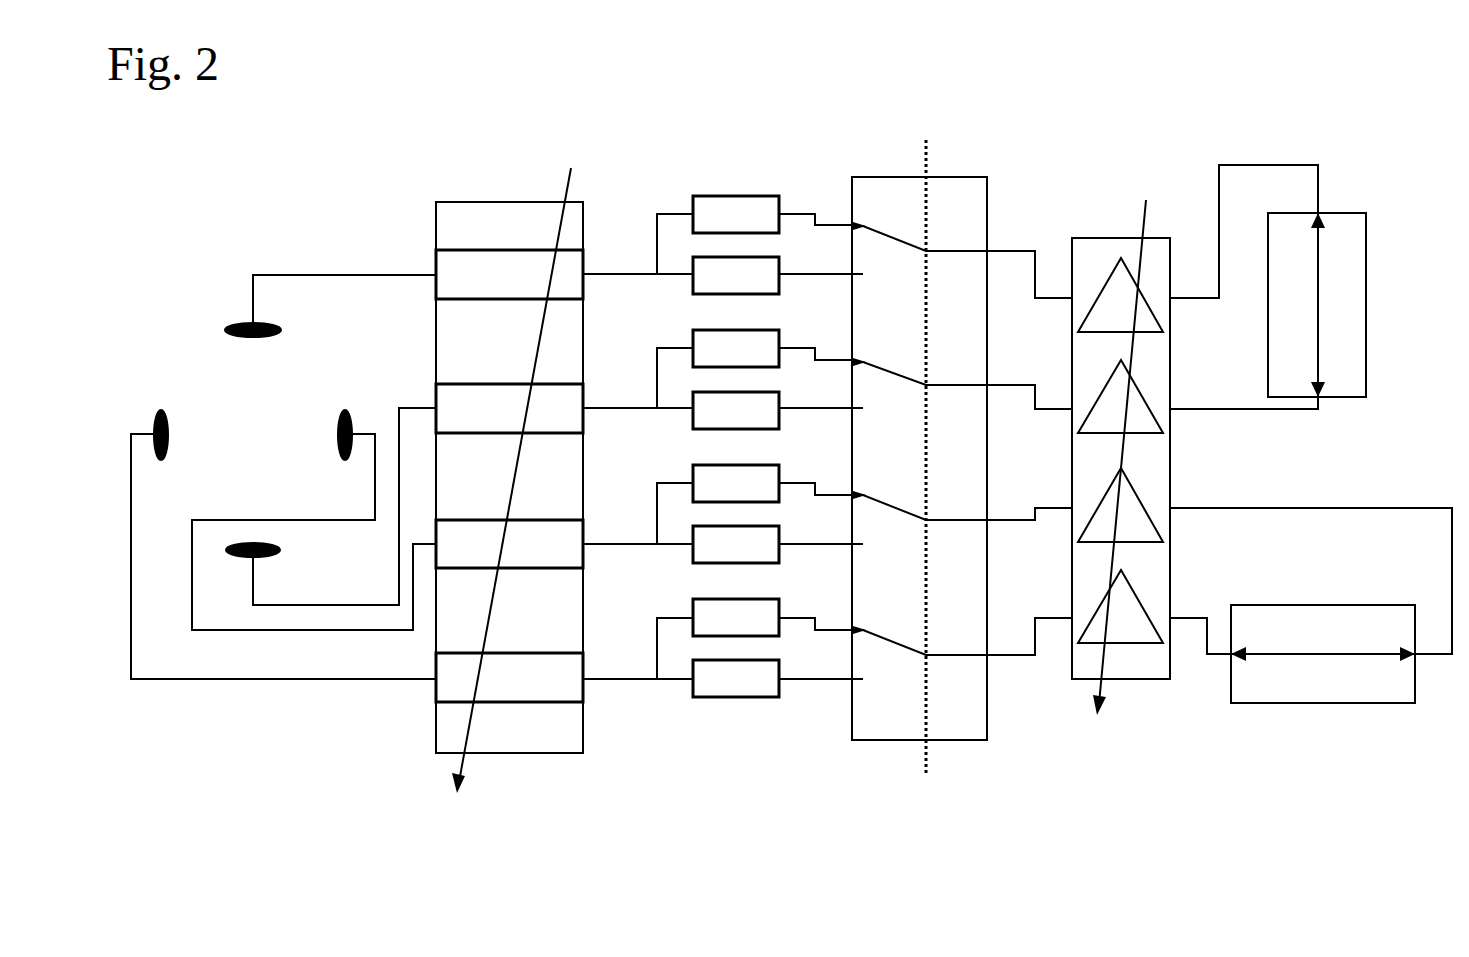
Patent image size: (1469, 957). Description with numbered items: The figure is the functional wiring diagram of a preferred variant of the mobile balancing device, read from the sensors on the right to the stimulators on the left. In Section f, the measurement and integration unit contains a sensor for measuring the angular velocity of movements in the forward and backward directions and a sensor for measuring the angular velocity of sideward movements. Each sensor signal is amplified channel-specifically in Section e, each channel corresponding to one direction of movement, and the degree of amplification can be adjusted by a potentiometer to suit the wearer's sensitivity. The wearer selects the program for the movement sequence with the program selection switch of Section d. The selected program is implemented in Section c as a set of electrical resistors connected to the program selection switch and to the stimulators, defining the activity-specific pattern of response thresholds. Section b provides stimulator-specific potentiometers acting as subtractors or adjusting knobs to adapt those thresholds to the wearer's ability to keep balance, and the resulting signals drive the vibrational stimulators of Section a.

The stimulators a is at (283, 577).
The stimulator-specific potentiometer b is at (509, 523).
The set of electrical resistors c is at (723, 537).
The program selection switch d is at (962, 509).
The channel-specific amplification e is at (1121, 539).
The angular velocity sensors f is at (1311, 522).